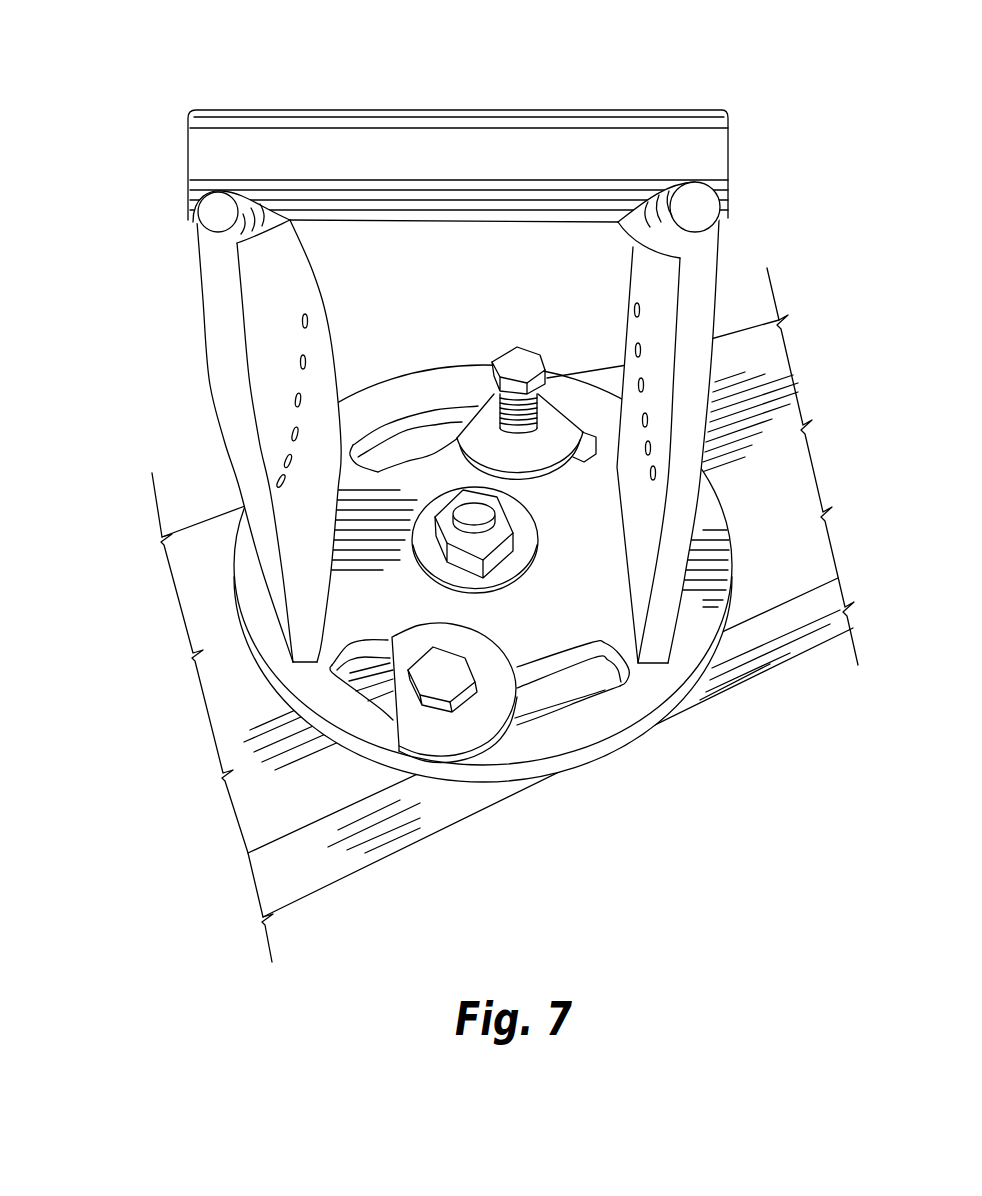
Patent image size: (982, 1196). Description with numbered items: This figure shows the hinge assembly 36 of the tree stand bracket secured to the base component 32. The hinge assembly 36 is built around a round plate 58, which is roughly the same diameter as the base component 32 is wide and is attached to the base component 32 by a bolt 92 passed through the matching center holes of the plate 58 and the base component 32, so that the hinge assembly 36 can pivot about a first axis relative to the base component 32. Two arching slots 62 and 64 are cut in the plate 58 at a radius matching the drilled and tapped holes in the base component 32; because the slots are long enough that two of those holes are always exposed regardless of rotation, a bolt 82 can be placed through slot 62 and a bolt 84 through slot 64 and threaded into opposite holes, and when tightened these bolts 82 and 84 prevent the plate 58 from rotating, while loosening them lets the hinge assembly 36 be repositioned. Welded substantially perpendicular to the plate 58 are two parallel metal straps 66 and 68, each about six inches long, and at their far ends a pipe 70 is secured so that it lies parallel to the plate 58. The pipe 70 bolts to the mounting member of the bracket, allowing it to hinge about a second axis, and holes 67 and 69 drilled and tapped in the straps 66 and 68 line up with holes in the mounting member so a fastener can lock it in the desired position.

The base component 32 is at (202, 535).
The hinge assembly 36 is at (167, 105).
The plate 58 is at (519, 553).
The arching slot 62 is at (598, 660).
The arching slot 64 is at (378, 440).
The metal strap 66 is at (253, 441).
The holes 67 is at (313, 367).
The metal strap 68 is at (689, 427).
The holes 69 is at (630, 350).
The pipe 70 is at (412, 140).
The bolt 82 is at (427, 667).
The bolt 84 is at (508, 363).
The bolt 92 is at (473, 512).